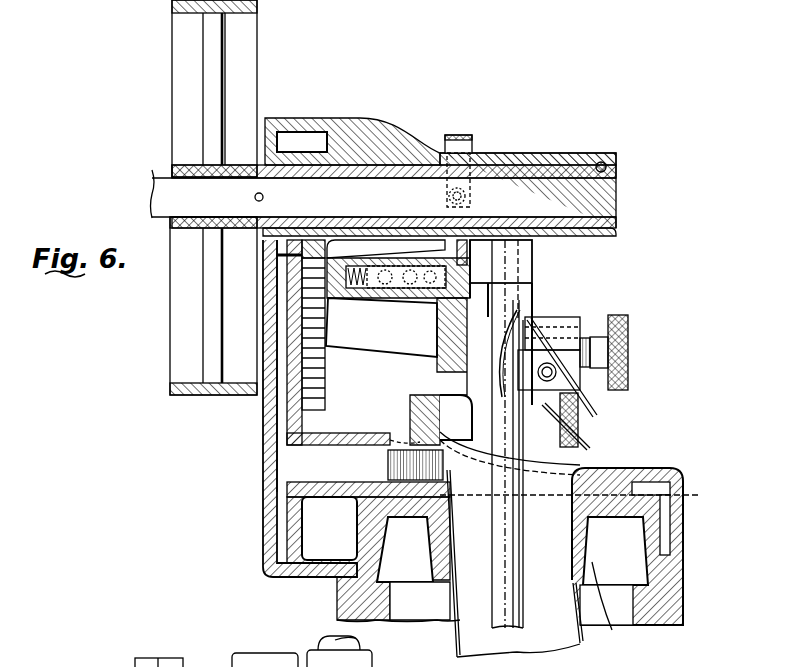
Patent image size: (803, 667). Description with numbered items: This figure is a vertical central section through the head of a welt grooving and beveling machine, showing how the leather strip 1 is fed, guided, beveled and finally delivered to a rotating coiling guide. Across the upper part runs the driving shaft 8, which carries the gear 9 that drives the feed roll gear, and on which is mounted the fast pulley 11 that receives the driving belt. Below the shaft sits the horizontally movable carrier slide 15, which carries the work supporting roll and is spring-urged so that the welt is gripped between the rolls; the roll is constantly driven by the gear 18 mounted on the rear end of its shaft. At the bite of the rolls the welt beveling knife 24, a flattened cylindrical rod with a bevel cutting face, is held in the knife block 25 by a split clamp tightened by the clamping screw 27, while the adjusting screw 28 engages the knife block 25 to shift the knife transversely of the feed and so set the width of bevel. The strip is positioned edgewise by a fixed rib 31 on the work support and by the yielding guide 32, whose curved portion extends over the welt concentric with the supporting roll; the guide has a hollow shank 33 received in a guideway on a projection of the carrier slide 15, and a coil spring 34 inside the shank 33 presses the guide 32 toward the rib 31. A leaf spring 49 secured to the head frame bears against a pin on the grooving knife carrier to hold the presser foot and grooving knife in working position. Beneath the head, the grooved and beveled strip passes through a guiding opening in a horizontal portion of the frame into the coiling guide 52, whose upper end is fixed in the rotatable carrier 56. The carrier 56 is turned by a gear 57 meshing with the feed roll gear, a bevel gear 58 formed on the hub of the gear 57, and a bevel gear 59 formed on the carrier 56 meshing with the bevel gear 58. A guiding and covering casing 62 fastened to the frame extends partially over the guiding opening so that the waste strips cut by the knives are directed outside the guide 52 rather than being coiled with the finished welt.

The leather strip 1 is at (492, 592).
The driving shaft 8 is at (517, 190).
The gear 9 is at (305, 150).
The fast pulley 11 is at (203, 395).
The carrier slide 15 is at (445, 338).
The gear 18 is at (312, 365).
The welt beveling knife 24 is at (542, 340).
The knife block 25 is at (547, 320).
The clamping screw 27 is at (580, 385).
The adjusting screw 28 is at (628, 320).
The rib 31 is at (525, 293).
The yielding guide 32 is at (497, 253).
The shank 33 is at (450, 270).
The coil spring 34 is at (355, 290).
The leaf spring 49 is at (462, 140).
The coiling guide 52 is at (575, 643).
The rotatable carrier 56 is at (616, 605).
The gear 57 is at (265, 540).
The bevel gear 58 is at (367, 425).
The bevel gear 59 is at (683, 495).
The guiding and covering casing 62 is at (595, 452).